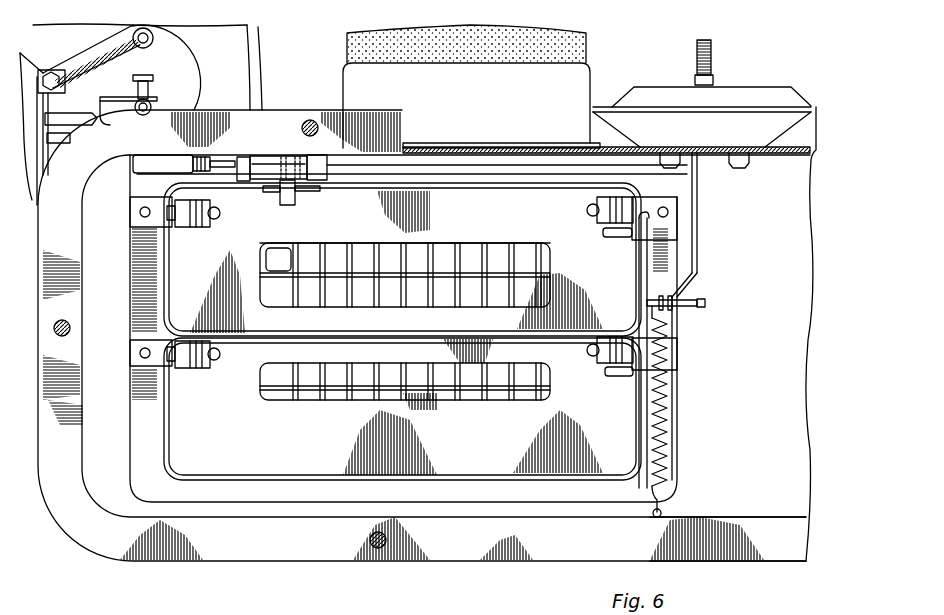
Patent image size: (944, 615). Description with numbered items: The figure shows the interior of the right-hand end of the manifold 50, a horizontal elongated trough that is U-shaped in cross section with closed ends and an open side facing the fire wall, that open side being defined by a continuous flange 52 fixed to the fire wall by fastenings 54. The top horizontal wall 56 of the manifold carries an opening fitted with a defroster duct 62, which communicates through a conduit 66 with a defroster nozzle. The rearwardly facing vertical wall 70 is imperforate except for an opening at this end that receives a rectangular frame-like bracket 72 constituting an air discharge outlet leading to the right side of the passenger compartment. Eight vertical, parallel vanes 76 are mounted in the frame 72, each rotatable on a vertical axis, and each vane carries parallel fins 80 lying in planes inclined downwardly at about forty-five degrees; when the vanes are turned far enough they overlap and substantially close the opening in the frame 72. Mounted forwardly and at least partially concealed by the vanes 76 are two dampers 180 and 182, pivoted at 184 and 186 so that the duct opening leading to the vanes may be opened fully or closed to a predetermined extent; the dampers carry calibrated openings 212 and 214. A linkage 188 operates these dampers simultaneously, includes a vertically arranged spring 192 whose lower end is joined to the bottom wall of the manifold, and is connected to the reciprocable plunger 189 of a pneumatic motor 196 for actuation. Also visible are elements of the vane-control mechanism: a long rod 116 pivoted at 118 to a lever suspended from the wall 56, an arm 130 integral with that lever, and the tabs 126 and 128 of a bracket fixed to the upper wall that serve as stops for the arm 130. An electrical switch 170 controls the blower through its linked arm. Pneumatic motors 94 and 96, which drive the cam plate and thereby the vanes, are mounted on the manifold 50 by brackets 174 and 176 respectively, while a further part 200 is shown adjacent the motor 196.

The manifold 50 is at (733, 517).
The continuous flange 52 is at (75, 510).
The fastenings 54 is at (70, 326).
The top horizontal wall 56 is at (510, 147).
The defroster duct 62 is at (560, 80).
The conduit 66 is at (585, 45).
The rearwardly facing vertical wall 70 is at (797, 490).
The frame-like bracket 72 is at (150, 447).
The vanes 76 is at (340, 244).
The fins 80 is at (292, 260).
The pneumatic motor 94 is at (30, 185).
The pneumatic motor 96 is at (247, 58).
The long rod 116 is at (318, 198).
The pivot 118 is at (282, 205).
The tab 126 is at (307, 157).
The tab 128 is at (262, 189).
The arm 130 is at (253, 158).
The electrical switch 170 is at (143, 165).
The bracket 174 is at (110, 40).
The bracket 176 is at (128, 50).
The damper 180 is at (288, 312).
The damper 182 is at (268, 452).
The pivot 184 is at (175, 212).
The pivot 186 is at (178, 371).
The linkage 188 is at (630, 250).
The reciprocable plunger 189 is at (698, 193).
The spring 192 is at (668, 410).
The pneumatic motor 196 is at (745, 97).
The screw 200 is at (712, 50).
The opening 212 is at (500, 245).
The opening 214 is at (348, 365).